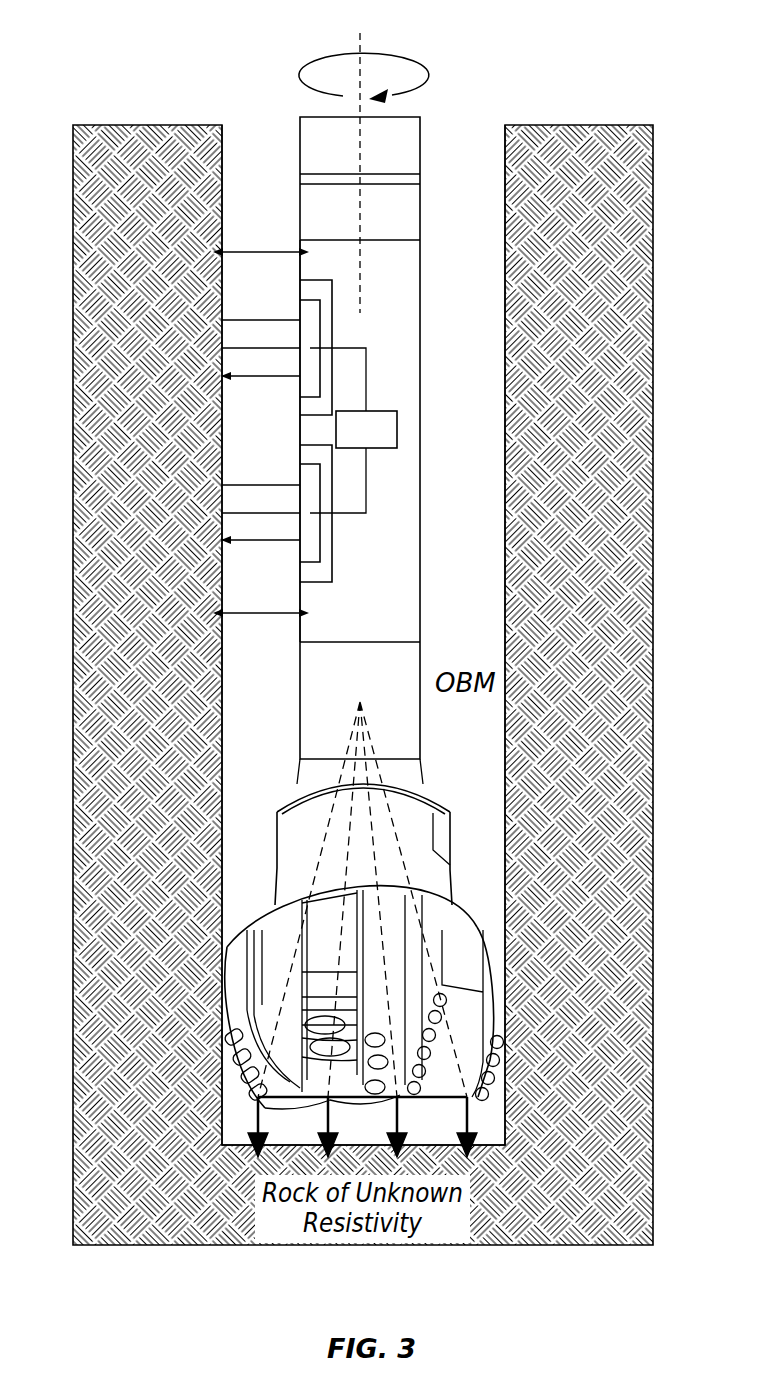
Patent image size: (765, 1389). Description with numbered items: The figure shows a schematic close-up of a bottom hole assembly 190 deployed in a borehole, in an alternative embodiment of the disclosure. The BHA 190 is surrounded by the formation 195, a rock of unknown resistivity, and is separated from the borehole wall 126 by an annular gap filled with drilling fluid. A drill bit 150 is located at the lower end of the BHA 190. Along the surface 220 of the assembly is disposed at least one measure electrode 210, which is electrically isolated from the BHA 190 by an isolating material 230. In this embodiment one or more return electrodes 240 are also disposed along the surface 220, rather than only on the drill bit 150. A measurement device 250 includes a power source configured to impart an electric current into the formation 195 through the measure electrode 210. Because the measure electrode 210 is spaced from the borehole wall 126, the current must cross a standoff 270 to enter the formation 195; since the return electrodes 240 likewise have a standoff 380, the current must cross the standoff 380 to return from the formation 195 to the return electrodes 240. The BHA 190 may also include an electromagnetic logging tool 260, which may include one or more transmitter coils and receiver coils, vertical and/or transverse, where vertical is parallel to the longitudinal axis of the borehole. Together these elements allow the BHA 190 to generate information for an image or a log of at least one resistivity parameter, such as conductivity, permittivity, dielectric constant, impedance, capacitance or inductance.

The bottom hole assembly 190 is at (128, 50).
The borehole wall 126 is at (222, 725).
The drill bit 150 is at (245, 1002).
The formation 195 is at (482, 1222).
The measure electrode 210 is at (312, 385).
The surface 220 is at (301, 624).
The isolating material 230 is at (312, 293).
The return electrode 240 is at (312, 473).
The measurement device 250 is at (392, 432).
The electromagnetic logging tool 260 is at (405, 222).
The standoff 270 is at (262, 250).
The standoff 380 is at (245, 612).